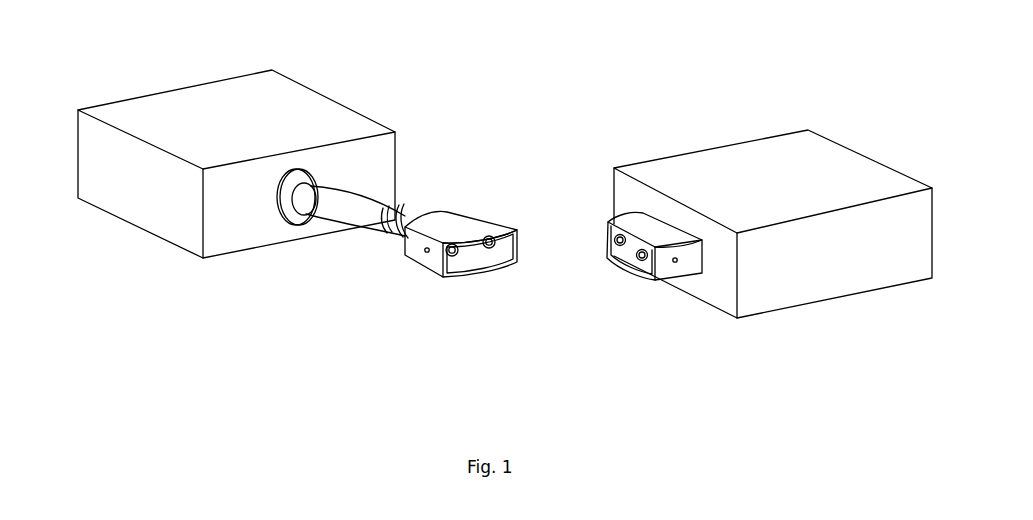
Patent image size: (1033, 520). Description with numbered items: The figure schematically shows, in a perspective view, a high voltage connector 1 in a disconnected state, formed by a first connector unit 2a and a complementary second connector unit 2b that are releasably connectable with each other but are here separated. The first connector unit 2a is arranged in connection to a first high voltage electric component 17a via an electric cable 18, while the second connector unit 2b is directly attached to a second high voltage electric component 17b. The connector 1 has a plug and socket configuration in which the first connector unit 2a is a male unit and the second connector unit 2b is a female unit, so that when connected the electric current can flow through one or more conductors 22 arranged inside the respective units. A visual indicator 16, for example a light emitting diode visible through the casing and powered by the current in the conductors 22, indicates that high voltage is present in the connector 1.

The high voltage connector 1 is at (563, 73).
The first connector unit 2a is at (444, 221).
The second connector unit 2b is at (662, 268).
The visual indicator 16 is at (427, 252).
The first high voltage electric component 17a is at (220, 123).
The second high voltage electric component 17b is at (753, 182).
The electric cable 18 is at (370, 217).
The conductors 22 is at (489, 249).